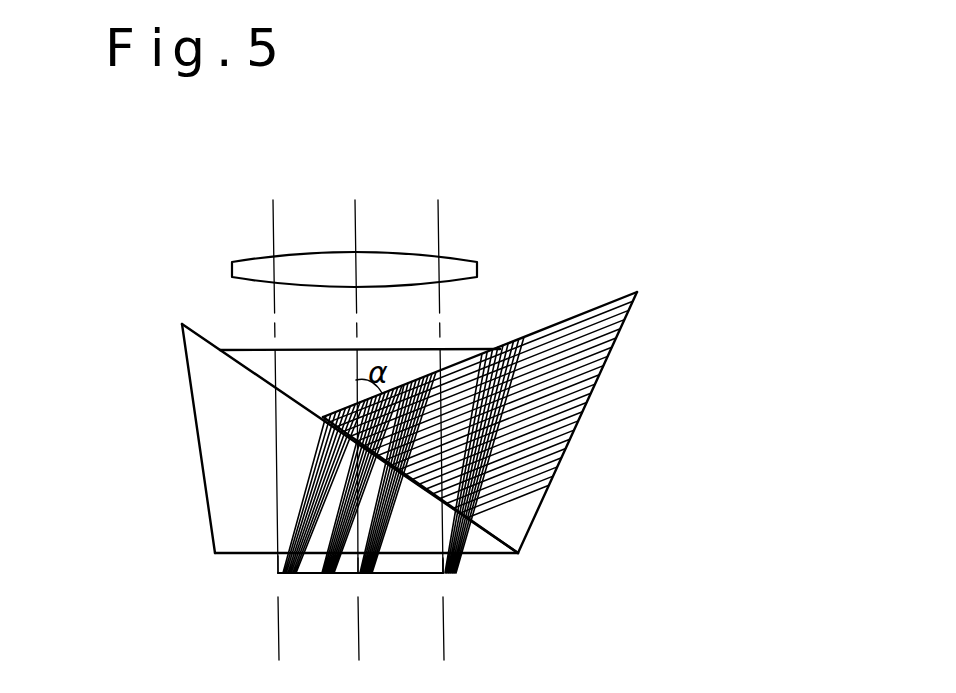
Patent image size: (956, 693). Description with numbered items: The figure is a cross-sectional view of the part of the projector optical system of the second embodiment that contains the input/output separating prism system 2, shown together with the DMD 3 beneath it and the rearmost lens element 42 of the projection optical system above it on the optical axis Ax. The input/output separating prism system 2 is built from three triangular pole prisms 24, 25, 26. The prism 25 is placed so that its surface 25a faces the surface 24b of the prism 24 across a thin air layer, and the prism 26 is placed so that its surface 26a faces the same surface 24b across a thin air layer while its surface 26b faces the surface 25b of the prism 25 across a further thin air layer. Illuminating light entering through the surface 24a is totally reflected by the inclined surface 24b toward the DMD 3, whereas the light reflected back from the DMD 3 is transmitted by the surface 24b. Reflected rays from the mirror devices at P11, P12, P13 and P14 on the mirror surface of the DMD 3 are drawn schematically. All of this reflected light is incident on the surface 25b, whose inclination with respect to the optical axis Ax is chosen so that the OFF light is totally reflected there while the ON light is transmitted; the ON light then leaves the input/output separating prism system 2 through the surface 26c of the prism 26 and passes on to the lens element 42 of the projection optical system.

The rearmost lens element 42 is at (232, 268).
The optical axis Ax is at (356, 218).
The input/output separating prism system 2 is at (396, 474).
The triangular pole prism 24 is at (333, 490).
The surface 24a is at (206, 492).
The surface 24b is at (488, 530).
The triangular pole prism 25 is at (538, 429).
The surface 25a is at (502, 533).
The surface 25b is at (613, 306).
The triangular pole prism 26 is at (407, 263).
The surface 26a is at (244, 350).
The surface 26b is at (502, 350).
The surface 26c is at (476, 349).
The DMD 3 is at (266, 570).
The mirror device P11 is at (277, 577).
The mirror device P12 is at (323, 576).
The mirror device P13 is at (360, 576).
The mirror device P14 is at (443, 574).